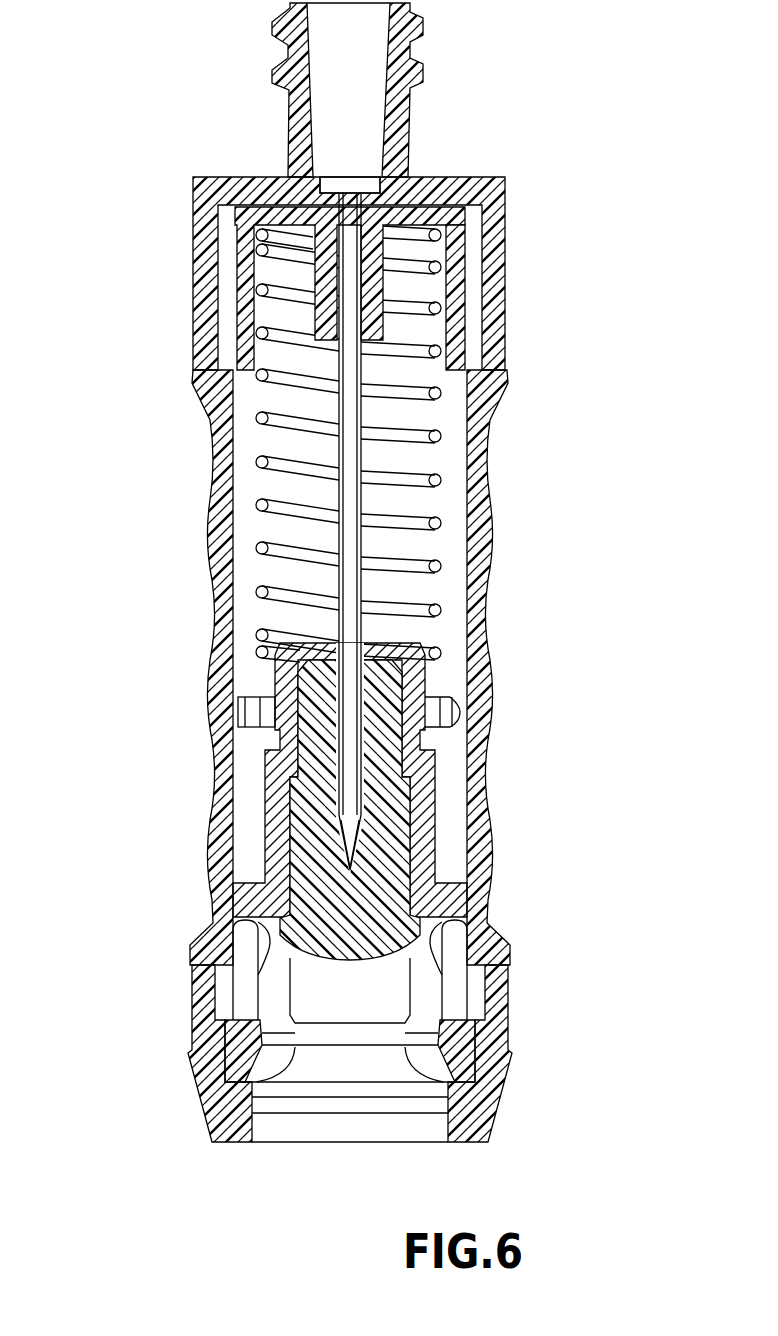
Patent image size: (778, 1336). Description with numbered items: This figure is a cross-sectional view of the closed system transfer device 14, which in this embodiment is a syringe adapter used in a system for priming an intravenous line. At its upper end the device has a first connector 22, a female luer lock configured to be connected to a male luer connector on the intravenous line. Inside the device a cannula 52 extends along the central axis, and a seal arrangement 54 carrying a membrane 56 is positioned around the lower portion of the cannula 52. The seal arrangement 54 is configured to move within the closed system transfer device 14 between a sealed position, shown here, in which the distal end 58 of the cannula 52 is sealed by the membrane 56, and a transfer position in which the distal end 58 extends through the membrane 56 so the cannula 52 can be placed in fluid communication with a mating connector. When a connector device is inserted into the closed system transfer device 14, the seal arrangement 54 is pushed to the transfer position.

The first connector 22 is at (420, 67).
The closed system transfer device 14 is at (218, 440).
The cannula 52 is at (350, 455).
The seal arrangement 54 is at (407, 744).
The membrane 56 is at (393, 838).
The distal end 58 is at (348, 835).